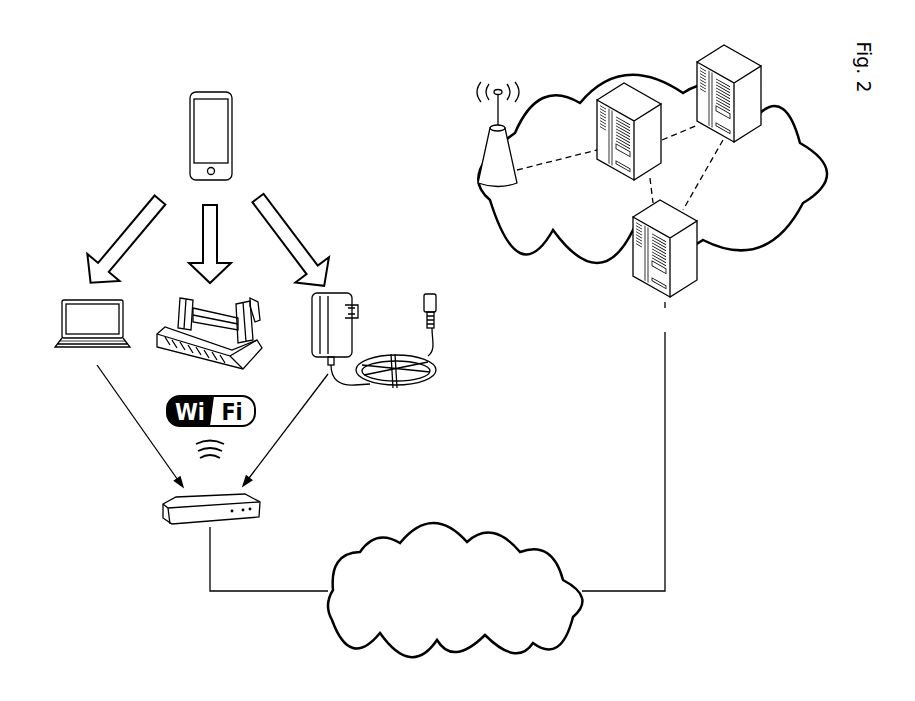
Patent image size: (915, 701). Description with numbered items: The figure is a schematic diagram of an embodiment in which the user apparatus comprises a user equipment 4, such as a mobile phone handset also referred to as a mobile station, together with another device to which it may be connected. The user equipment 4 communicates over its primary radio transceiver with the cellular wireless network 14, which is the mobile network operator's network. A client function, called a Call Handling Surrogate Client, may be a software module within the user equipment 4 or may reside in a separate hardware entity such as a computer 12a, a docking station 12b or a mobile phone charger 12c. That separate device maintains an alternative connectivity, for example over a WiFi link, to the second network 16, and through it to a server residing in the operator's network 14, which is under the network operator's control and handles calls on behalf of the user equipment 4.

The user equipment 4 is at (230, 93).
The computer 12a is at (62, 318).
The docking station 12b is at (251, 345).
The mobile phone charger 12c is at (338, 293).
The cellular wireless network 14 is at (797, 112).
The second network 16 is at (506, 535).